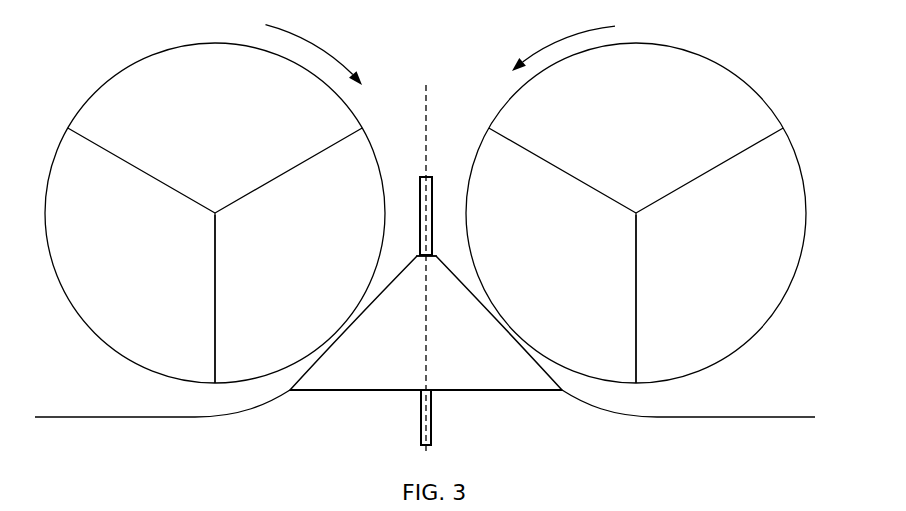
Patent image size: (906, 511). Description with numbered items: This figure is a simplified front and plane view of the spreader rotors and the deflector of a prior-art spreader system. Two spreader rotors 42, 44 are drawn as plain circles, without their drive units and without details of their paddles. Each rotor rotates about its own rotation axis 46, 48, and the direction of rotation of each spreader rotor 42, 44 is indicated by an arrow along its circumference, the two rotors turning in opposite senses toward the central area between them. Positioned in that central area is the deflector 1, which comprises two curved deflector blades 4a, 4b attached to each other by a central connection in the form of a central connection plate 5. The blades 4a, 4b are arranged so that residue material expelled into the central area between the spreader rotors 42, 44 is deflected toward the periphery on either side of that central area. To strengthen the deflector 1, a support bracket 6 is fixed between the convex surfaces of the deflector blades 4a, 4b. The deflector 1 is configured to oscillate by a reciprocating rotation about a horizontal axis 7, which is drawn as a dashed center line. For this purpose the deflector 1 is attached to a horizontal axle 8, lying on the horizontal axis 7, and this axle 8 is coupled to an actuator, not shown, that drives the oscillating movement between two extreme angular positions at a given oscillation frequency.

The deflector 1 is at (363, 402).
The deflector blade 4a is at (203, 415).
The deflector blade 4b is at (691, 418).
The central connection plate 5 is at (432, 262).
The support bracket 6 is at (449, 358).
The horizontal axis 7 is at (427, 133).
The horizontal axle 8 is at (422, 178).
The spreader rotor 42 is at (217, 137).
The spreader rotor 44 is at (652, 136).
The rotation axis 46 is at (215, 213).
The rotation axis 48 is at (636, 216).